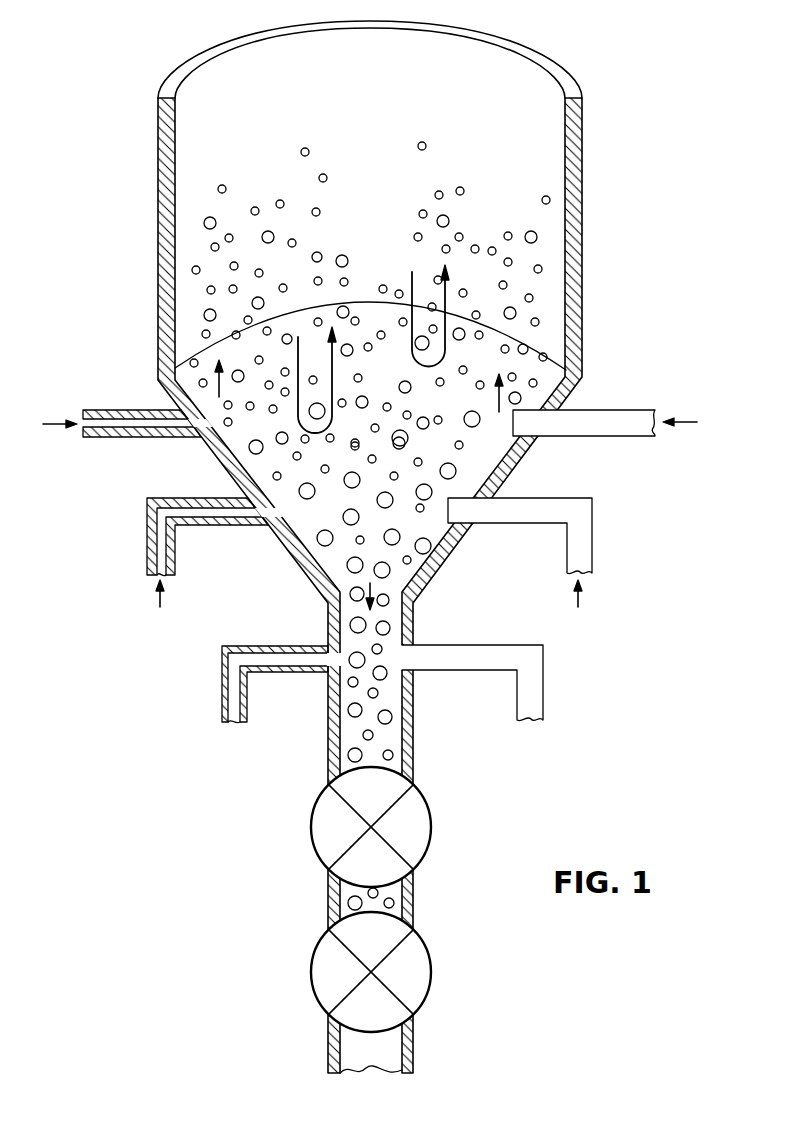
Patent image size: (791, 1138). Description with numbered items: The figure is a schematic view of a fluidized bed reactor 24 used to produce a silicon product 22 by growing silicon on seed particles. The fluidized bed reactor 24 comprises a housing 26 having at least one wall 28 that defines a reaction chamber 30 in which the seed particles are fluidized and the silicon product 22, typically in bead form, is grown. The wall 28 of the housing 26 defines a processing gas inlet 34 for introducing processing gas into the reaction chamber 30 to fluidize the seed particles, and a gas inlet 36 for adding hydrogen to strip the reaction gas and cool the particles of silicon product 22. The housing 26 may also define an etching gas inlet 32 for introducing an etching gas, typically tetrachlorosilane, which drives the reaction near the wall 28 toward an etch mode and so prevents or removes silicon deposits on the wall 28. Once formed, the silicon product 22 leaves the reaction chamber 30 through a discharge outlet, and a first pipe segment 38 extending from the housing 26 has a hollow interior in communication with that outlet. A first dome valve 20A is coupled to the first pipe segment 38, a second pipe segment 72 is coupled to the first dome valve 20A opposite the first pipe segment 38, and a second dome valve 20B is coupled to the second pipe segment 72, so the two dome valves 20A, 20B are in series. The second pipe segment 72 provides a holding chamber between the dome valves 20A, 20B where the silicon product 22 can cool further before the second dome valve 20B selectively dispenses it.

The first dome valve 20A is at (466, 822).
The second dome valve 20B is at (466, 970).
The silicon product 22 is at (529, 350).
The fluidized bed reactor 24 is at (412, 543).
The housing 26 is at (412, 547).
The wall 28 is at (577, 270).
The reaction chamber 30 is at (220, 92).
The etching gas inlet 32 is at (118, 410).
The processing gas inlet 34 is at (147, 555).
The gas inlet 36 is at (222, 705).
The first pipe segment 38 is at (328, 733).
The second pipe segment 72 is at (328, 898).